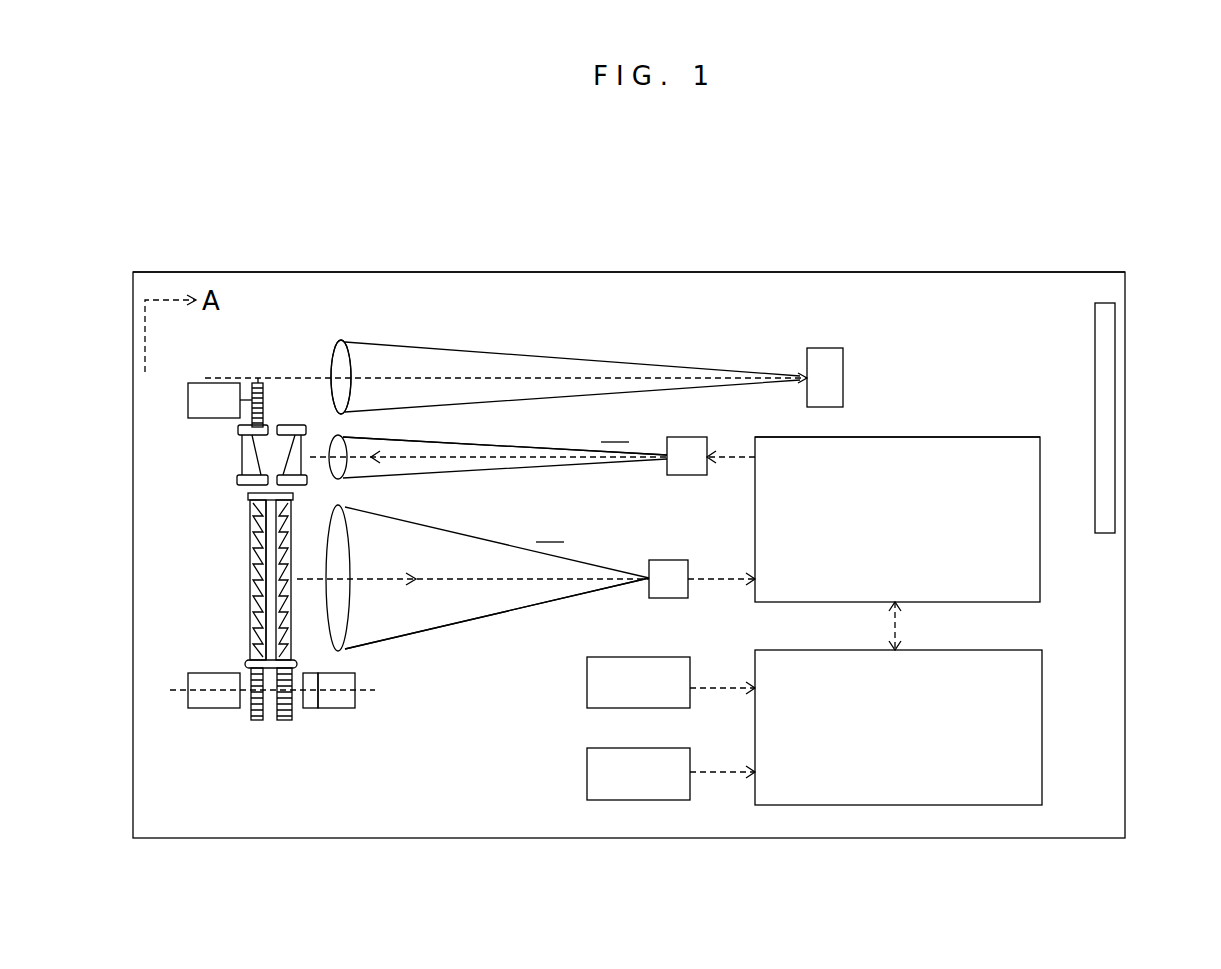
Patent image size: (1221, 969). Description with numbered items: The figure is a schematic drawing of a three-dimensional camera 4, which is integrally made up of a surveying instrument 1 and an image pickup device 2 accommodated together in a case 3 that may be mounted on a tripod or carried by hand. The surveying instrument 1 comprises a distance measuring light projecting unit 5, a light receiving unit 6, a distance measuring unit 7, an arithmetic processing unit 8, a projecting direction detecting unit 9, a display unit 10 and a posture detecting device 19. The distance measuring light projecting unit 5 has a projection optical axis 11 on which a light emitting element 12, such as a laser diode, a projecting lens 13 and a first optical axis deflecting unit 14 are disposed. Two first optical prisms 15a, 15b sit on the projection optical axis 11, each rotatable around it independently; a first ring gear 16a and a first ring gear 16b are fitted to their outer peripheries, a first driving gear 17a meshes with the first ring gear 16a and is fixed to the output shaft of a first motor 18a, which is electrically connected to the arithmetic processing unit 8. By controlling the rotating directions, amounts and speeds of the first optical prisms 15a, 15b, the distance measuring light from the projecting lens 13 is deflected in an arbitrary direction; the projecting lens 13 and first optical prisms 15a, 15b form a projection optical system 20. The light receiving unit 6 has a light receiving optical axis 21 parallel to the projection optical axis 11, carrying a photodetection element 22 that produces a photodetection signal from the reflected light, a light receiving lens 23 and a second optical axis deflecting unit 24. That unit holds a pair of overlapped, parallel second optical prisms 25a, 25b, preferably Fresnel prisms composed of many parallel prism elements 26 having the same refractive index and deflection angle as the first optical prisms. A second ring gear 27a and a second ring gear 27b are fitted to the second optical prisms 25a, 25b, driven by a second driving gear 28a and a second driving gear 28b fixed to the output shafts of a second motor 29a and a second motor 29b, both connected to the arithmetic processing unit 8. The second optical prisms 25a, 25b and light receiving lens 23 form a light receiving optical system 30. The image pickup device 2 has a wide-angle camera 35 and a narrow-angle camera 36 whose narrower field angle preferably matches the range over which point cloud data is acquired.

The surveying instrument 1 is at (903, 427).
The image pickup device 2 is at (852, 343).
The case 3 is at (855, 272).
The three-dimensional camera 4 is at (684, 264).
The distance measuring light projecting unit 5 is at (577, 478).
The light receiving unit 6 is at (450, 648).
The distance measuring unit 7 is at (993, 437).
The arithmetic processing unit 8 is at (1045, 695).
The projecting direction detecting unit 9 is at (633, 657).
The display unit 10 is at (1093, 337).
The projection optical axis 11 is at (480, 458).
The light emitting element 12 is at (690, 437).
The projecting lens 13 is at (348, 423).
The first optical axis deflecting unit 14 is at (278, 408).
The first optical prism 15a is at (242, 457).
The first optical prism 15b is at (323, 476).
The first ring gear 16a is at (238, 428).
The first ring gear 16b is at (300, 425).
The first driving gear 17a is at (258, 383).
The first motor 18a is at (200, 383).
The posture detecting device 19 is at (667, 748).
The projection optical system 20 is at (614, 428).
The light receiving optical axis 21 is at (497, 580).
The photodetection element 22 is at (673, 558).
The light receiving lens 23 is at (353, 568).
The second optical axis deflecting unit 24 is at (233, 534).
The second optical prism 25a is at (248, 603).
The second optical prism 25b is at (293, 632).
The prism elements 26 is at (273, 568).
The second ring gear 27a is at (247, 662).
The second ring gear 27b is at (315, 712).
The second driving gear 28a is at (258, 722).
The second driving gear 28b is at (285, 722).
The second motor 29a is at (217, 710).
The second motor 29b is at (338, 712).
The light receiving optical system 30 is at (549, 528).
The wide-angle camera 35 is at (488, 343).
The narrow-angle camera 36 is at (341, 377).